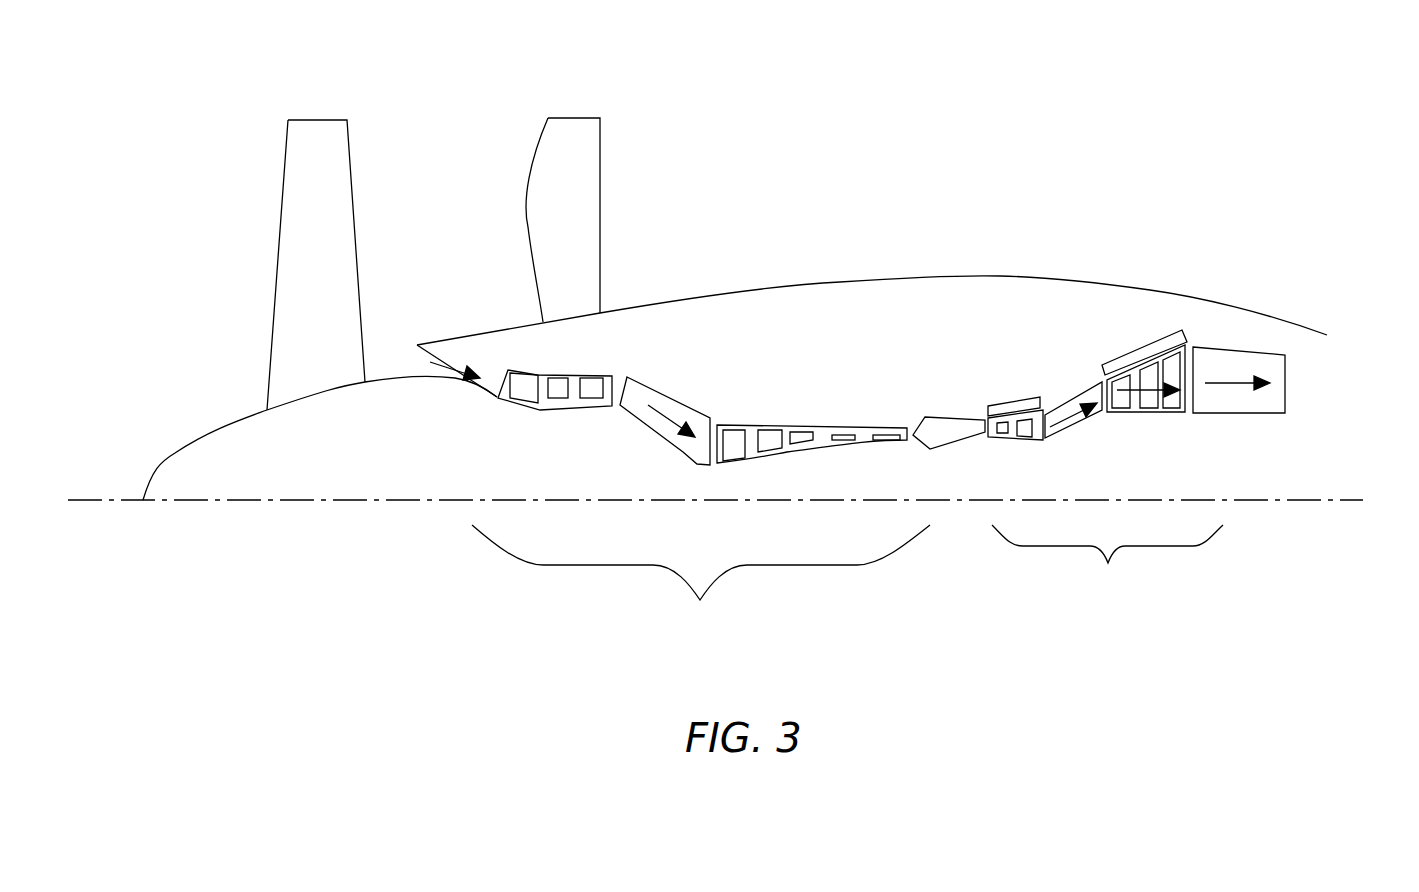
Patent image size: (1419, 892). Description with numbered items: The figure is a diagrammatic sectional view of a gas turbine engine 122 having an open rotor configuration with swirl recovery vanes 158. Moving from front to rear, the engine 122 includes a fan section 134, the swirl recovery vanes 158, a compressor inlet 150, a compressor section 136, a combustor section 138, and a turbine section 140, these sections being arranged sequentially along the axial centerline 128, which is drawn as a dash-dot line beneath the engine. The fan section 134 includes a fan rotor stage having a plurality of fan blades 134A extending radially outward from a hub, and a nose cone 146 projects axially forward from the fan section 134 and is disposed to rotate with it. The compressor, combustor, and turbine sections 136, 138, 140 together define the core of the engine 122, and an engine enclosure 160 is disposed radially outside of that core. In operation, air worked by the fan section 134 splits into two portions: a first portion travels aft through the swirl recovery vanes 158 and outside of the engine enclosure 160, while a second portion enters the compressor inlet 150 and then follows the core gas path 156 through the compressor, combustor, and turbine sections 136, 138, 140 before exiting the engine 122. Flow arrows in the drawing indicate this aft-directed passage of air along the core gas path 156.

The gas turbine engine 122 is at (1026, 183).
The axial centerline 128 is at (1290, 500).
The fan section 134 is at (262, 288).
The fan blades 134A is at (347, 277).
The compressor section 136 is at (701, 503).
The combustor section 138 is at (947, 417).
The turbine section 140 is at (1136, 464).
The nose cone 146 is at (175, 453).
The compressor inlet 150 is at (404, 345).
The core gas path 156 is at (663, 410).
The swirl recovery vanes 158 is at (580, 170).
The engine enclosure 160 is at (838, 283).